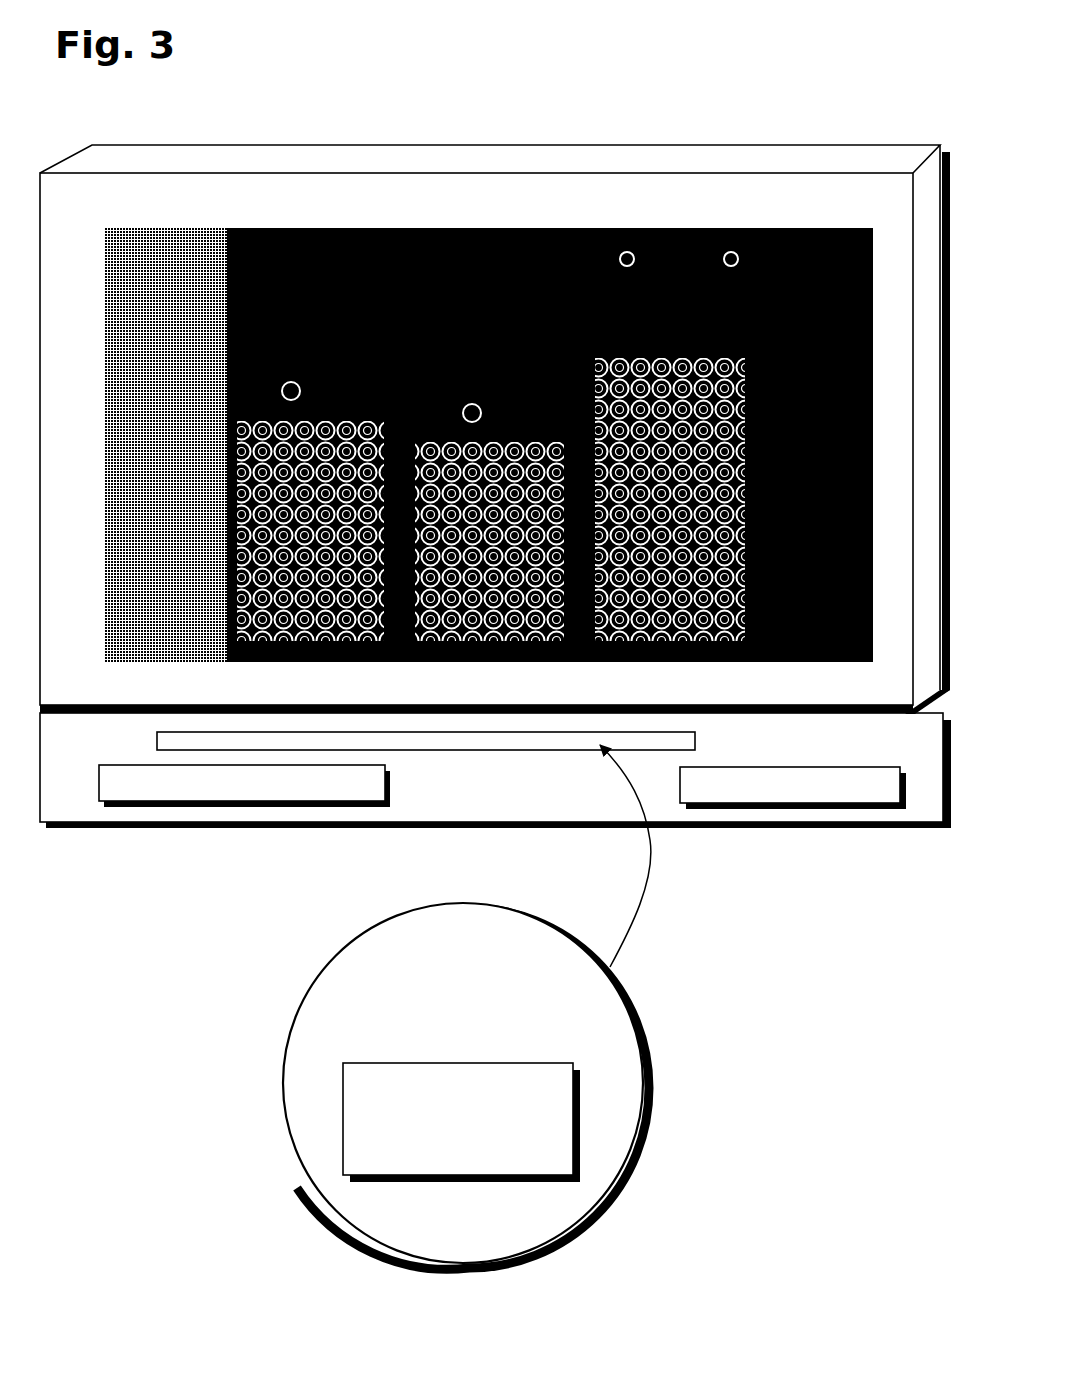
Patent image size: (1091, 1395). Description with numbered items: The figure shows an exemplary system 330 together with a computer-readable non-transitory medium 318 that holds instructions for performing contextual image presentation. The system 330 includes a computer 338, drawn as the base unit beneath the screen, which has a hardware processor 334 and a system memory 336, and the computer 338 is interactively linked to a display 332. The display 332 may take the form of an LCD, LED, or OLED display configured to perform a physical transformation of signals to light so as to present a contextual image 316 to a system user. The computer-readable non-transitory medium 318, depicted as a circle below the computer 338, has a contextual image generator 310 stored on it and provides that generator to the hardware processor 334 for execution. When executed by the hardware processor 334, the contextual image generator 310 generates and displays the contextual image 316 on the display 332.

The system 330 is at (886, 94).
The display 332 is at (530, 145).
The contextual image 316 is at (272, 229).
The computer 338 is at (773, 828).
The hardware processor 334 is at (392, 789).
The system memory 336 is at (718, 767).
The computer-readable non-transitory medium 318 is at (283, 1100).
The contextual image generator 310 is at (474, 1176).